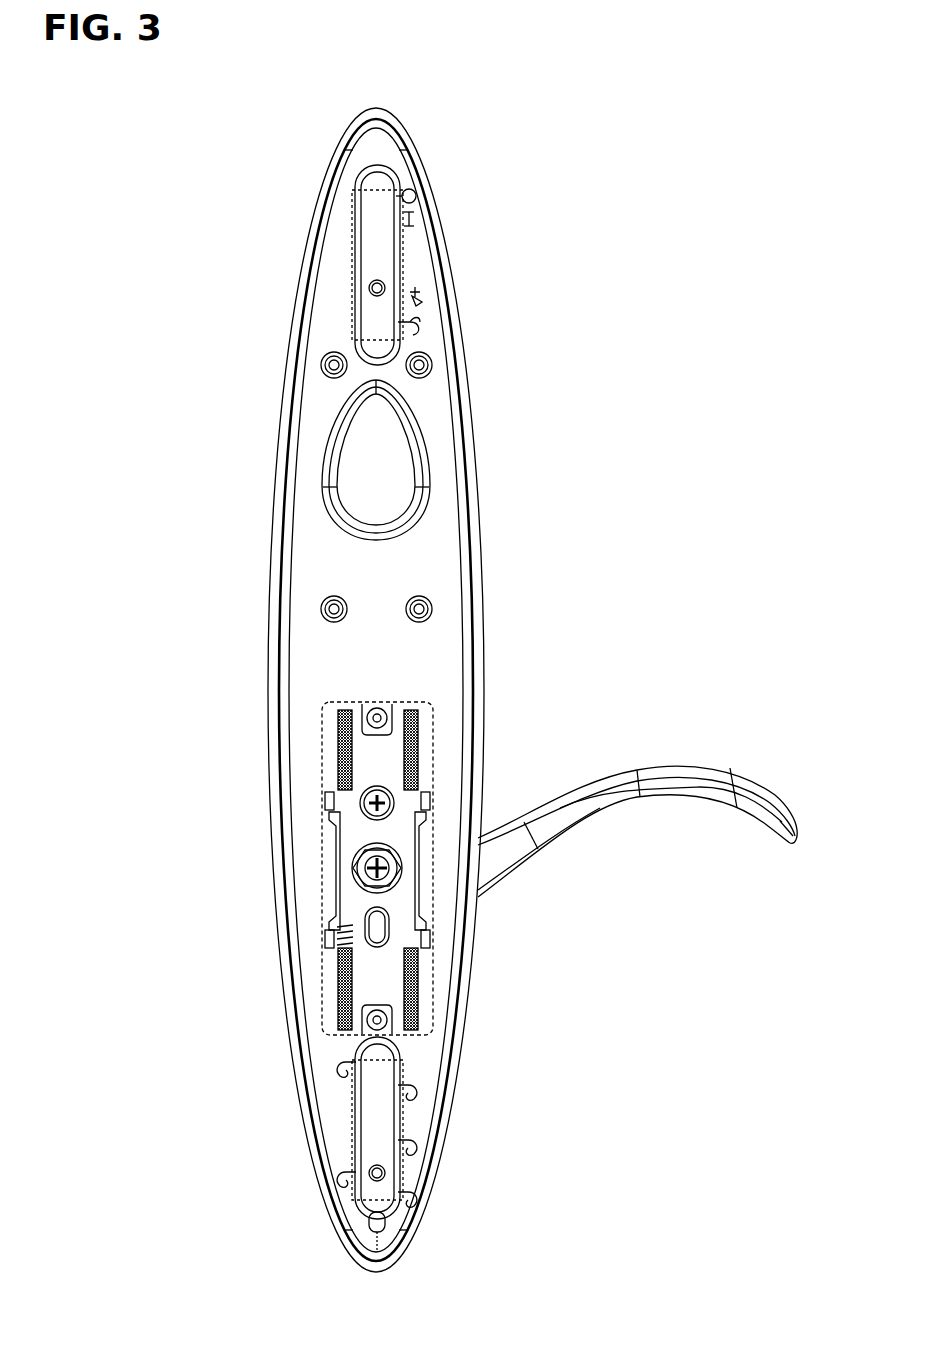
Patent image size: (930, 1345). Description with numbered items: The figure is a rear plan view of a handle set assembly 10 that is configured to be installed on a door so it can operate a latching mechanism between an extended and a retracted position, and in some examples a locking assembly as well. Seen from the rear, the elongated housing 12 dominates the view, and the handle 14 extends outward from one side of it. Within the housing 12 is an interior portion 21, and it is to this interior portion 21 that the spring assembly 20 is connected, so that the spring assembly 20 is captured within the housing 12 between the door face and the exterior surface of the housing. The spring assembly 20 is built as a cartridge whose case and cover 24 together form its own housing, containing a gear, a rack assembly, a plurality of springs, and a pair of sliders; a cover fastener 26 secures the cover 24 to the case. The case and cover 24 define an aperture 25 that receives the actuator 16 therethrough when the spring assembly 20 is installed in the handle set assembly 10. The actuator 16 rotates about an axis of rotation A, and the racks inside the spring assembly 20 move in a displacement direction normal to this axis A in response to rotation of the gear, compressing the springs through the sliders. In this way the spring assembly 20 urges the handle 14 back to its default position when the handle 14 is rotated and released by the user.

The handle set assembly 10 is at (673, 199).
The housing 12 is at (478, 480).
The handle 14 is at (737, 768).
The actuator 16 is at (362, 870).
The spring assembly 20 is at (362, 967).
The interior portion of the housing 21 is at (400, 665).
The cover 24 is at (375, 763).
The aperture 25 is at (360, 874).
The cover fastener 26 is at (392, 808).
The axis of rotation A is at (380, 870).